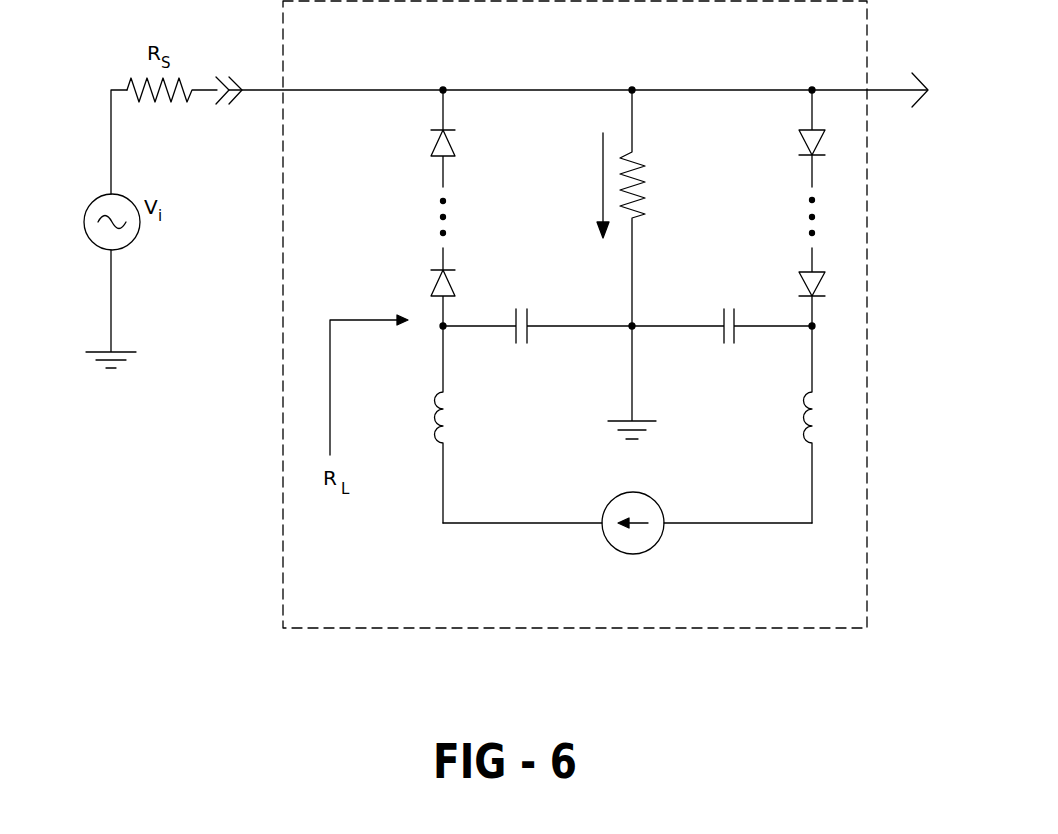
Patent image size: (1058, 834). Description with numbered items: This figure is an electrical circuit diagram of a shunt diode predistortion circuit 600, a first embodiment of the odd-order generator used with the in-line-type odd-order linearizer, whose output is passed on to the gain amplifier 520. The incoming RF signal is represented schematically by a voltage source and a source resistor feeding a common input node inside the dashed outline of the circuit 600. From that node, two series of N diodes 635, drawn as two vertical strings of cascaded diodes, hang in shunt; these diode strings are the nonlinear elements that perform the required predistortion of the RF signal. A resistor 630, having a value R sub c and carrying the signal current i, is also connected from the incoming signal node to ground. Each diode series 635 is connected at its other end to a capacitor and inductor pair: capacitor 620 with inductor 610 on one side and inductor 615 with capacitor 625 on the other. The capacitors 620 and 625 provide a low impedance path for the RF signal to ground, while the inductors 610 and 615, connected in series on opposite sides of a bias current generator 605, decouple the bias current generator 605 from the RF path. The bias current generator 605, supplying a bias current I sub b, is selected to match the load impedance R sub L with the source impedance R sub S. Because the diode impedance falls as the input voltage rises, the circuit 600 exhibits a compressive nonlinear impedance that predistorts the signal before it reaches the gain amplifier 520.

The gain amplifier 520 is at (941, 88).
The shunt diode predistortion circuit 600 is at (708, 628).
The bias current generator 605 is at (611, 545).
The inductor 610 is at (445, 427).
The inductor 615 is at (804, 415).
The capacitor 620 is at (530, 345).
The capacitor 625 is at (737, 342).
The resistor 630 is at (645, 186).
The series of N diodes 635 is at (428, 234).